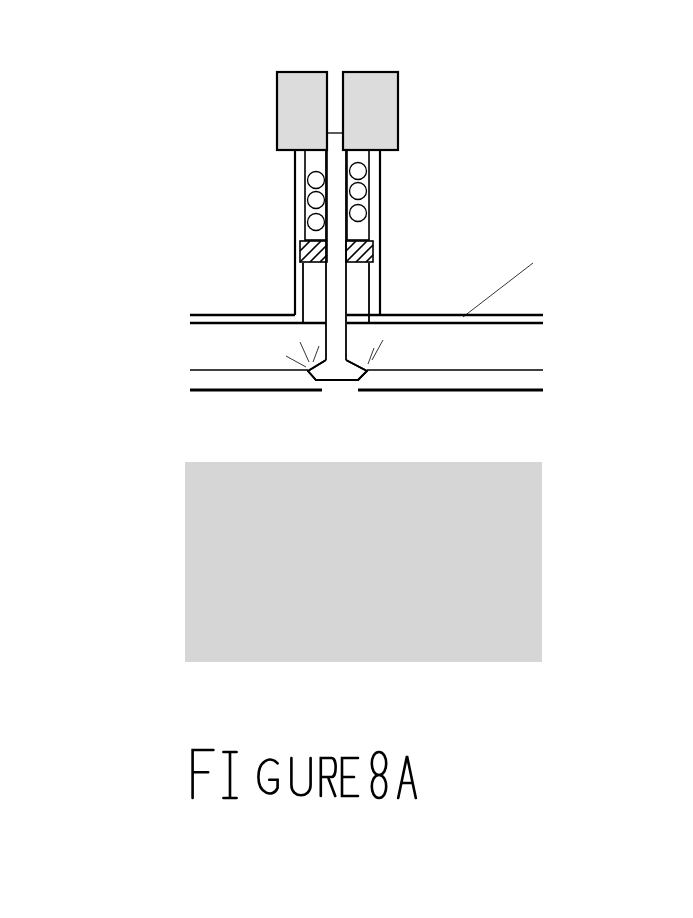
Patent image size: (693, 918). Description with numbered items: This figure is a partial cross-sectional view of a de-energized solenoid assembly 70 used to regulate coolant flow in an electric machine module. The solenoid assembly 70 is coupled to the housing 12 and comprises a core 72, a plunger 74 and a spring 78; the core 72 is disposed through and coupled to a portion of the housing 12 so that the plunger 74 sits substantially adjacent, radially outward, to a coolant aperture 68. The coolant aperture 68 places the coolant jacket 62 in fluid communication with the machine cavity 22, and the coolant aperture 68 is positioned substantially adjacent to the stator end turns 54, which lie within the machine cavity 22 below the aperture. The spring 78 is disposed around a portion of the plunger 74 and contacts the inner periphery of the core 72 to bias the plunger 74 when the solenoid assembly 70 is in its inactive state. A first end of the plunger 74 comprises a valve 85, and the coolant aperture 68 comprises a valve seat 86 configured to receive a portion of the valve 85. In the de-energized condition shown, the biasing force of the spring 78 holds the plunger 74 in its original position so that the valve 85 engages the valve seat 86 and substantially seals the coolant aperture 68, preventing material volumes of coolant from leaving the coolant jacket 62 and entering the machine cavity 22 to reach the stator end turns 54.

The solenoid assembly 70 is at (162, 10).
The core 72 is at (578, 83).
The plunger 74 is at (337, 111).
The spring 78 is at (362, 186).
The coolant aperture 68 is at (512, 238).
The valve seat 86 is at (337, 370).
The housing 12 is at (540, 315).
The coolant jacket 62 is at (528, 348).
The machine cavity 22 is at (611, 433).
The valve 85 is at (328, 376).
The stator end turns 54 is at (597, 725).